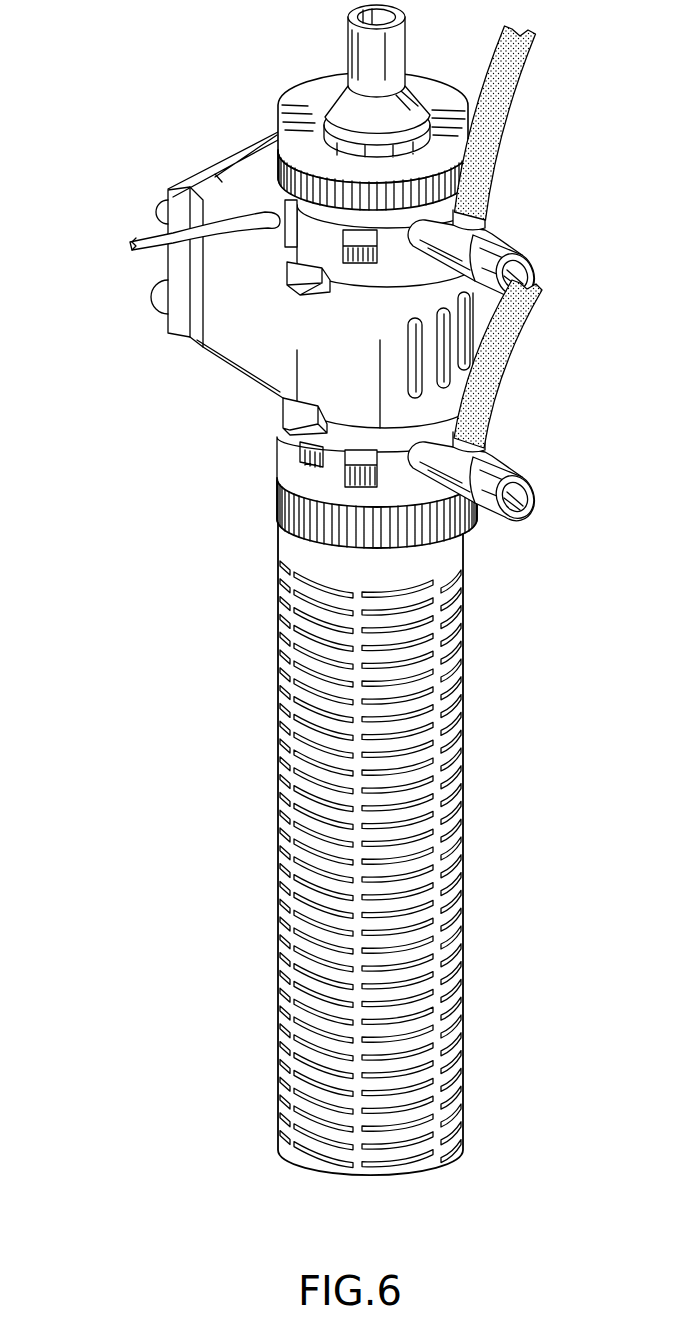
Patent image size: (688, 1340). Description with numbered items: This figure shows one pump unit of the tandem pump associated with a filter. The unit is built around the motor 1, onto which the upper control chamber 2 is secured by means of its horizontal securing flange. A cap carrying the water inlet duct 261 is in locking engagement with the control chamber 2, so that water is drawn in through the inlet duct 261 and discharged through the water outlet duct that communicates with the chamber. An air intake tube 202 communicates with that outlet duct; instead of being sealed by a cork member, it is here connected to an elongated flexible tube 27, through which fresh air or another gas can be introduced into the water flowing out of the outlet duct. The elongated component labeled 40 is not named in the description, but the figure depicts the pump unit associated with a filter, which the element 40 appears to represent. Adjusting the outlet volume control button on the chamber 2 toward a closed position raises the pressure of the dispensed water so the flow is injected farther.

The motor 1 is at (243, 330).
The upper control chamber 2 is at (287, 187).
The elongated flexible tube 27 is at (515, 112).
The filter cartridge casing 40 is at (283, 810).
The air intake tube 202 is at (490, 217).
The water inlet duct 261 is at (347, 42).